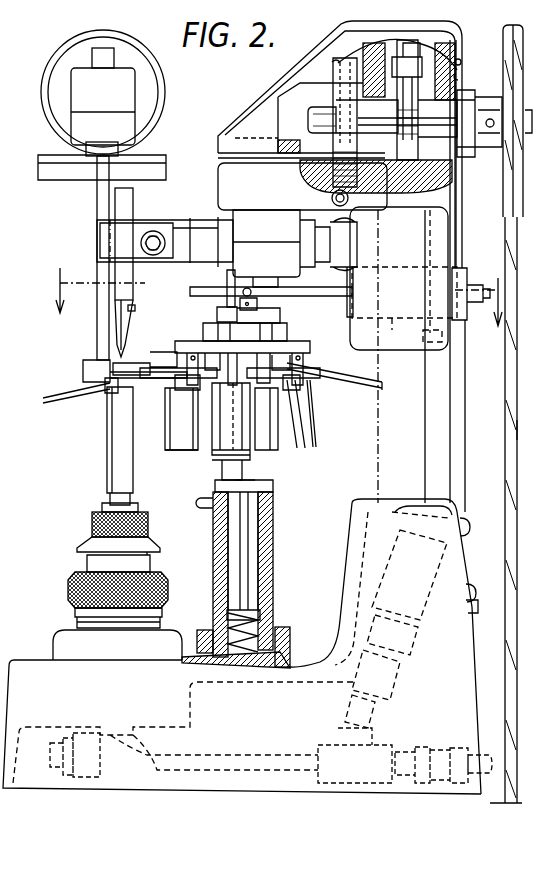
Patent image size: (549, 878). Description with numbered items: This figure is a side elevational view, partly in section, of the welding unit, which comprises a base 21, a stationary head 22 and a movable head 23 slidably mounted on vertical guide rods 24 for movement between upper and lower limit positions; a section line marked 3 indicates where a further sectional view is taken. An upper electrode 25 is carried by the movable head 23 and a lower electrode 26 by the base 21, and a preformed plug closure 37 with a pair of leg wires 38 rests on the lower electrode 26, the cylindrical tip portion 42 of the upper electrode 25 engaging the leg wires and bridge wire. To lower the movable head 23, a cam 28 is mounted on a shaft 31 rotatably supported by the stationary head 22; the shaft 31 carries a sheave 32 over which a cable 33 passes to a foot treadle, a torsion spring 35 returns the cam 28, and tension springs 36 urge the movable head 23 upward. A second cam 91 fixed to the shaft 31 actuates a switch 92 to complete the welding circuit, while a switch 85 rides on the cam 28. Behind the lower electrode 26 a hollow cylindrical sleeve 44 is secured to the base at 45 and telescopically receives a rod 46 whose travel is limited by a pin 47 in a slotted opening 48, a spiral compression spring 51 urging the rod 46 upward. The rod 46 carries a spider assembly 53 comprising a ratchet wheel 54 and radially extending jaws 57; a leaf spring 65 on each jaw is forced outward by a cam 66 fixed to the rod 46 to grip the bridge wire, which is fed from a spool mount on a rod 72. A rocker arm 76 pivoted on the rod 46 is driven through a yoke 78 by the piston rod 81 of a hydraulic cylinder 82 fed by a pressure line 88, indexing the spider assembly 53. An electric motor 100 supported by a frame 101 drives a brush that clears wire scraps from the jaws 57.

The section line 3- 3 is at (276, 284).
The base 21 is at (263, 722).
The stationary head 22 is at (277, 84).
The movable head 23 is at (219, 182).
The vertical guide rods 24 is at (377, 466).
The upper electrode 25 is at (128, 334).
The lower electrode 26 is at (110, 455).
The cam 28 is at (410, 85).
The shaft 31 is at (314, 116).
The sheave 32 is at (505, 194).
The cable 33 is at (505, 428).
The torsion spring 35 is at (462, 155).
The tension springs 36 is at (331, 195).
The plug closure 37 is at (108, 394).
The leg wires 38 is at (50, 396).
The cylindrical tip portion 42 is at (105, 360).
The hollow cylindrical sleeve 44 is at (217, 567).
The sleeve securing point 45 is at (287, 640).
The rod 46 is at (260, 534).
The pin 47 is at (205, 498).
The slotted opening 48 is at (217, 533).
The spiral compression spring 51 is at (207, 630).
The spider assembly 53 is at (305, 338).
The ratchet wheel 54 is at (207, 328).
The jaws 57 is at (175, 398).
The leaf spring 65 is at (197, 427).
The cam 66 is at (182, 441).
The rod 72 is at (256, 473).
The rocker arm 76 is at (217, 312).
The yoke 78 is at (226, 275).
The piston rod 81 is at (311, 297).
The hydraulic cylinder 82 is at (459, 268).
The switch 85 is at (420, 52).
The line 88 is at (476, 303).
The second cam 91 is at (341, 143).
The switch 92 is at (332, 62).
The electric motor 100 is at (143, 97).
The frame 101 is at (65, 170).